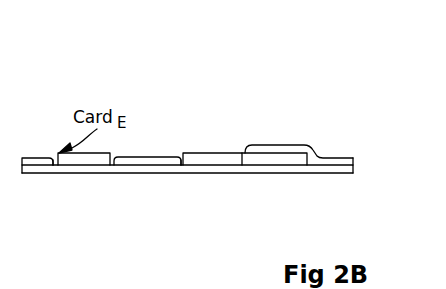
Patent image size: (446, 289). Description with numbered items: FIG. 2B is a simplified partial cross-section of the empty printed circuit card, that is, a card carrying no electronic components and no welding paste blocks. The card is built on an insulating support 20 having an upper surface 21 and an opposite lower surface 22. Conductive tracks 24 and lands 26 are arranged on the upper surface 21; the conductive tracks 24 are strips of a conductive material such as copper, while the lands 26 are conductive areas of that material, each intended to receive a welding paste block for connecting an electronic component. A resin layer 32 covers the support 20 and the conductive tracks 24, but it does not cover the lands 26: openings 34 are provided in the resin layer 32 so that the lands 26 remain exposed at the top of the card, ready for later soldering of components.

The insulating support 20 is at (42, 168).
The upper surface 21 is at (331, 163).
The lower surface 22 is at (323, 175).
The conductive tracks 24 is at (273, 161).
The lands 26 is at (83, 161).
The resin layer 32 is at (36, 159).
The openings 34 is at (53, 163).